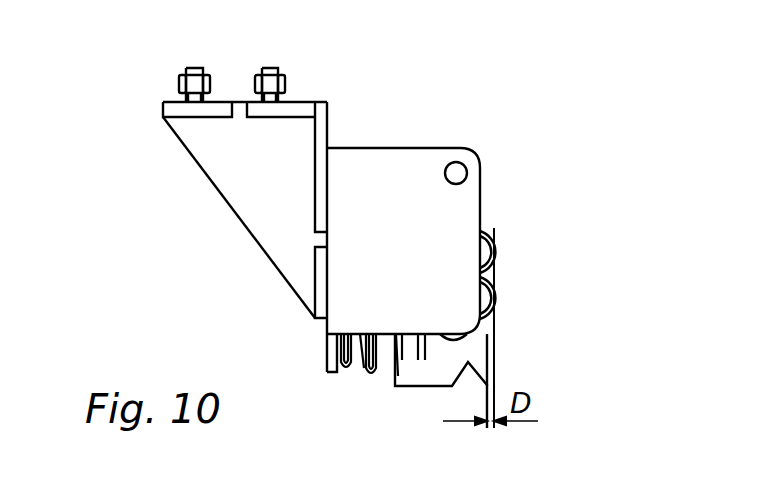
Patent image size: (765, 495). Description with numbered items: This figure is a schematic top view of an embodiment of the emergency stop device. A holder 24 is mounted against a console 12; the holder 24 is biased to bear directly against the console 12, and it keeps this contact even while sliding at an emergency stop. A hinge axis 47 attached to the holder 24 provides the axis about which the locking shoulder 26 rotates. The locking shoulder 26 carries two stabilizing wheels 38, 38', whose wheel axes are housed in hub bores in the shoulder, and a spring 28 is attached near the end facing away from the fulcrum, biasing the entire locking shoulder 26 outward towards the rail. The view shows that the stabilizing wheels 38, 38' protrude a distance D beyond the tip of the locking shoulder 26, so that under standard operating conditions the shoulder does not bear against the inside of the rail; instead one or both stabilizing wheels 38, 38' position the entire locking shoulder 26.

The console 12 is at (196, 158).
The holder 24 is at (413, 153).
The hinge axis 47 is at (457, 172).
The stabilizing wheel 38 is at (521, 247).
The stabilizing wheel 38' is at (525, 296).
The spring 28 is at (377, 373).
The locking shoulder 26 is at (430, 382).